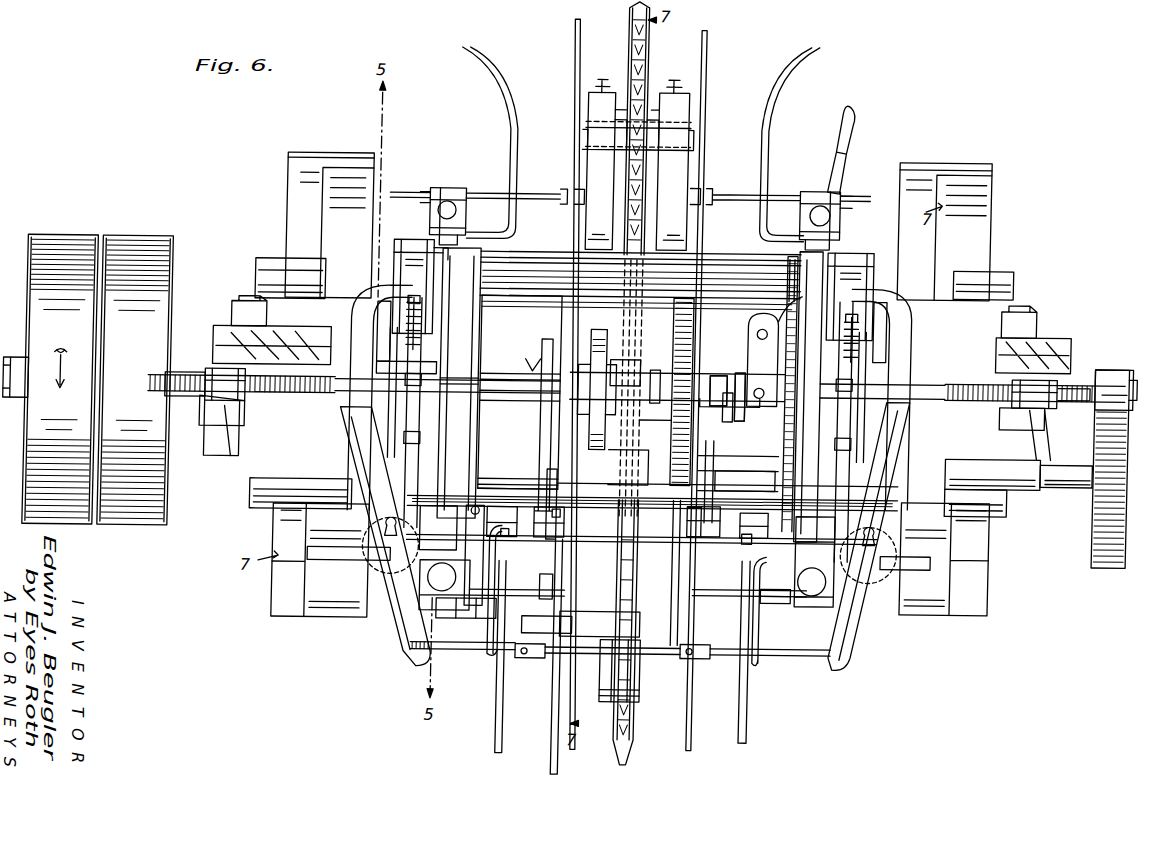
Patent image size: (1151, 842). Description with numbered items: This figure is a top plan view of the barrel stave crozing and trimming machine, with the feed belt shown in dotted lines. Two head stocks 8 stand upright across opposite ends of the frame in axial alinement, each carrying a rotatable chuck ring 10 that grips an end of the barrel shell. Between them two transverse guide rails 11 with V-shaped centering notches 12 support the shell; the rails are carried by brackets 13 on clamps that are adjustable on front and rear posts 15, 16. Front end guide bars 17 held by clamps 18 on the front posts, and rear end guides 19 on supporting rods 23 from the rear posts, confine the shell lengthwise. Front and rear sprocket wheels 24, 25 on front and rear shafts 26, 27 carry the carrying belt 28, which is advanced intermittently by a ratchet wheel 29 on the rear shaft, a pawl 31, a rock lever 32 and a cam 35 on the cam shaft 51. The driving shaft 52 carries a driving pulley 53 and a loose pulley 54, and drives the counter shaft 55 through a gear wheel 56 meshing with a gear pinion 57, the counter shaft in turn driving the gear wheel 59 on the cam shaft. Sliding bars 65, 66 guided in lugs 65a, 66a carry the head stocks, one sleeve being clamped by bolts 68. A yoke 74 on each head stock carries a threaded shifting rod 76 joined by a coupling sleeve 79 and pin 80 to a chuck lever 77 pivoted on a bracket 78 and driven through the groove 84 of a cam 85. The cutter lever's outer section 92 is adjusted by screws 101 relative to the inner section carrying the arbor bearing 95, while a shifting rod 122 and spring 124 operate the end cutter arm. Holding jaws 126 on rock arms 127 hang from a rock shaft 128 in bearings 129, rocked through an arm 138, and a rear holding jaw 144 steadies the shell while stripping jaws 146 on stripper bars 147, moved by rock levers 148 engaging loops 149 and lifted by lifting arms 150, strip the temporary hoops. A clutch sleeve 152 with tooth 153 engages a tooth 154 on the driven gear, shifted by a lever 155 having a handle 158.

The head stock 8 is at (630, 395).
The chuck ring 10 is at (444, 584).
The guide rail 11 is at (567, 49).
The centering notch 12 is at (712, 378).
The bracket 13 is at (526, 211).
The front post 15 is at (448, 207).
The rear post 16 is at (816, 594).
The end guide bar 17 is at (503, 117).
The clamp 18 is at (443, 194).
The rear end guide 19 is at (503, 706).
The supporting rod 23 is at (783, 602).
The front sprocket wheel 24 is at (621, 44).
The rear sprocket wheel 25 is at (636, 740).
The front shaft 26 is at (685, 135).
The rear shaft 27 is at (686, 637).
The carrying belt 28 is at (618, 302).
The ratchet wheel 29 is at (559, 691).
The pawl 31 is at (560, 620).
The rock lever 32 is at (590, 434).
The cam 35 is at (594, 342).
The cam shaft 51 is at (530, 366).
The driving shaft 52 is at (504, 378).
The driving pulley 53 is at (60, 379).
The loose pulley 54 is at (135, 380).
The counter shaft 55 is at (1078, 484).
The gear wheel 56 is at (1095, 541).
The gear pinion 57 is at (1117, 368).
The gear wheel 59 is at (694, 336).
The front sliding bar 65 is at (990, 276).
The front lug 65a is at (925, 252).
The rear sliding bar 66 is at (1004, 501).
The rear lug 66a is at (924, 517).
The bolt 68 is at (672, 458).
The yoke 74 is at (376, 332).
The shifting rod 76 is at (170, 384).
The chuck lever 77 is at (230, 338).
The bracket 78 is at (238, 325).
The coupling sleeve 79 is at (205, 397).
The pin 80 is at (216, 410).
The groove 84 is at (217, 450).
The cam 85 is at (234, 450).
The outer section 92 is at (396, 430).
The bearing 95 is at (382, 372).
The adjusting screw 101 is at (458, 395).
The shifting rod 122 is at (356, 400).
The spring 124 is at (416, 328).
The holding jaw 126 is at (546, 345).
The rock arm 127 is at (717, 459).
The rock shaft 128 is at (695, 538).
The bearing 129 is at (784, 539).
The arm 138 is at (465, 619).
The rear holding jaw 144 is at (642, 690).
The stripping jaw 146 is at (554, 670).
The stripper bar 147 is at (480, 654).
The rock lever 148 is at (400, 586).
The loop 149 is at (405, 382).
The lifting arm 150 is at (499, 553).
The clutch sleeve 152 is at (784, 365).
The clutch tooth 153 is at (757, 403).
The clutch tooth 154 is at (722, 409).
The shifting lever 155 is at (795, 300).
The handle 158 is at (847, 126).